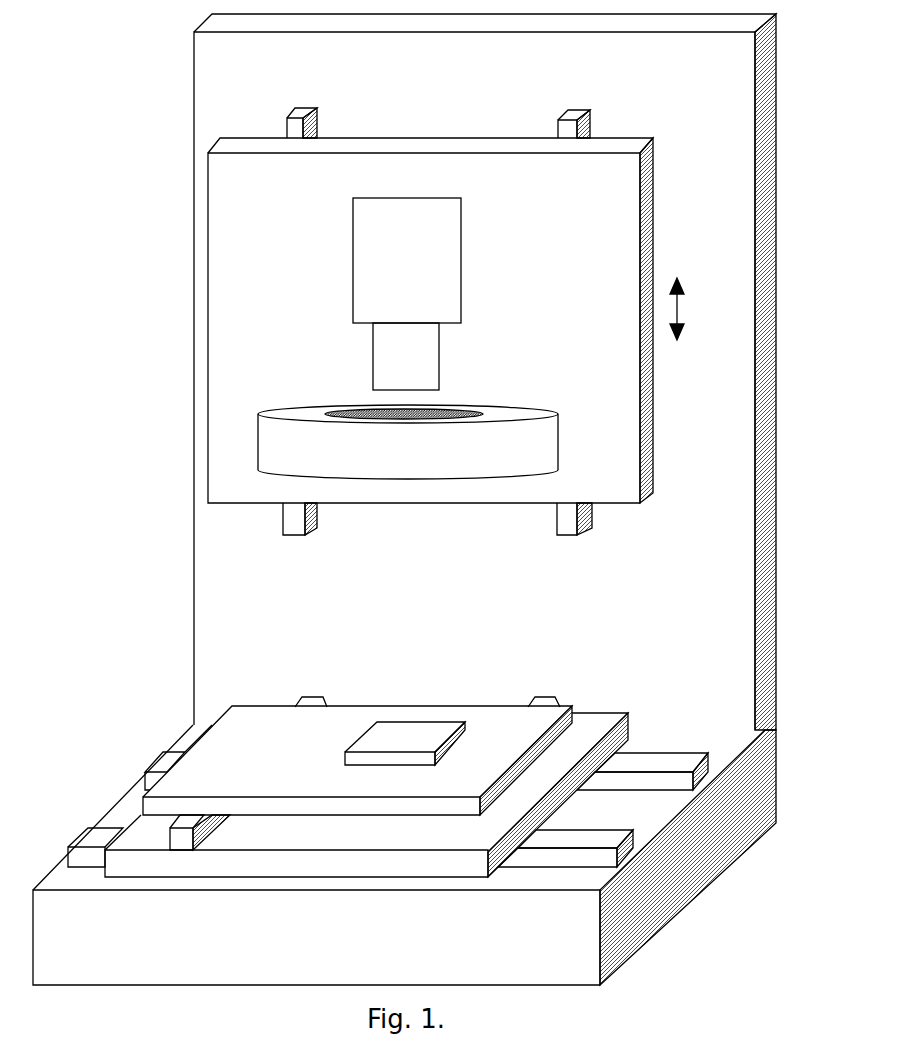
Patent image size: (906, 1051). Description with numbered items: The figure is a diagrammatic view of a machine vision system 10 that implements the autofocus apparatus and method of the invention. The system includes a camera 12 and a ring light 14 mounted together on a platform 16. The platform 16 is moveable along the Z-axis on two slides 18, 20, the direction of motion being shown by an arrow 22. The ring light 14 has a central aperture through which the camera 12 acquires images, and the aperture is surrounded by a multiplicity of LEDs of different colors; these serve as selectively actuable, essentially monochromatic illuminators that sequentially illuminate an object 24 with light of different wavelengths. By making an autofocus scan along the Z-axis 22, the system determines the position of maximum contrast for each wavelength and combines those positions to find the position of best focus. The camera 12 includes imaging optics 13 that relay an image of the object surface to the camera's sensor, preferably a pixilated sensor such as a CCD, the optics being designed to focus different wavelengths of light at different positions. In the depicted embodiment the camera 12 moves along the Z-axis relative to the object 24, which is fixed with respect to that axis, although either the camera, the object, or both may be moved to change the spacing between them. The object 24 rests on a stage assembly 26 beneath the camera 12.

The machine vision system 10 is at (152, 363).
The camera 12 is at (461, 285).
The imaging optics 13 is at (440, 368).
The ring light 14 is at (558, 450).
The platform 16 is at (430, 336).
The slide 18 is at (318, 117).
The slide 20 is at (577, 110).
The arrow 22 is at (677, 318).
The object 24 is at (467, 723).
The stage plate 26 is at (292, 732).